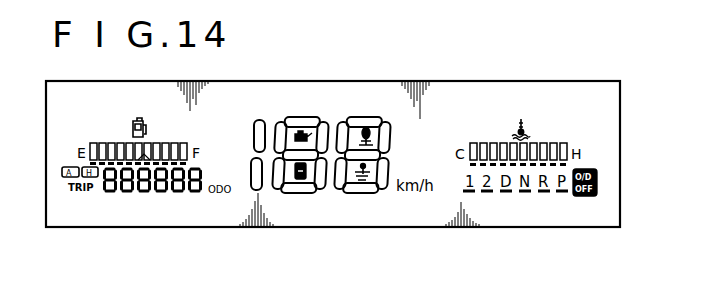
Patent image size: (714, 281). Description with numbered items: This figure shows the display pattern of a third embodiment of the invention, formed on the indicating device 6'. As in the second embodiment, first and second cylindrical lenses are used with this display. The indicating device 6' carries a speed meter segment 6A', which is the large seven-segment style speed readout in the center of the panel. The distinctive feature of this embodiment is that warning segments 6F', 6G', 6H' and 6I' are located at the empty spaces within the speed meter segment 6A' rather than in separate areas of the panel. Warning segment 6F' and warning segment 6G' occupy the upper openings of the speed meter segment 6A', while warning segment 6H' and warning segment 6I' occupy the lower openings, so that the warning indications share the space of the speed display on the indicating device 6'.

The indicating device 6' is at (333, 128).
The speed meter segment 6A' is at (331, 111).
The warning segment 6F' is at (340, 85).
The warning segment 6G' is at (408, 87).
The warning segment 6H' is at (287, 215).
The warning segment 6I' is at (375, 216).